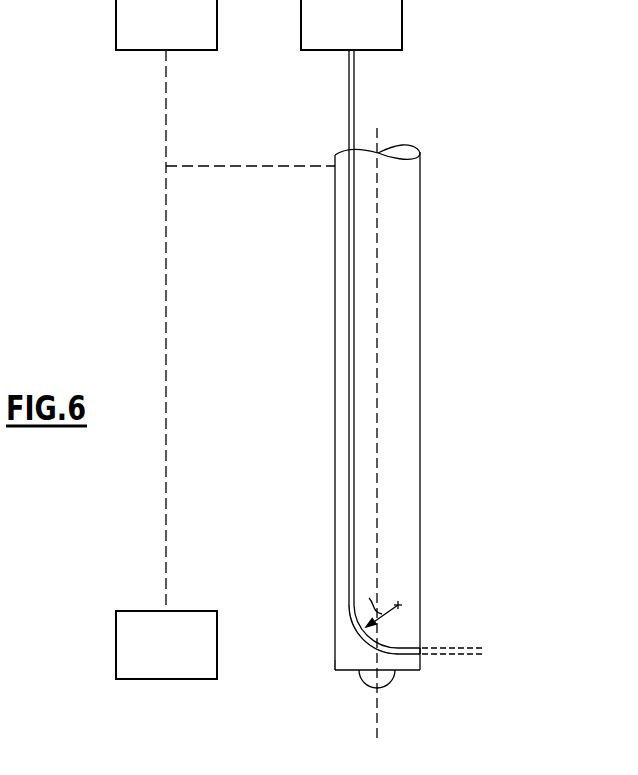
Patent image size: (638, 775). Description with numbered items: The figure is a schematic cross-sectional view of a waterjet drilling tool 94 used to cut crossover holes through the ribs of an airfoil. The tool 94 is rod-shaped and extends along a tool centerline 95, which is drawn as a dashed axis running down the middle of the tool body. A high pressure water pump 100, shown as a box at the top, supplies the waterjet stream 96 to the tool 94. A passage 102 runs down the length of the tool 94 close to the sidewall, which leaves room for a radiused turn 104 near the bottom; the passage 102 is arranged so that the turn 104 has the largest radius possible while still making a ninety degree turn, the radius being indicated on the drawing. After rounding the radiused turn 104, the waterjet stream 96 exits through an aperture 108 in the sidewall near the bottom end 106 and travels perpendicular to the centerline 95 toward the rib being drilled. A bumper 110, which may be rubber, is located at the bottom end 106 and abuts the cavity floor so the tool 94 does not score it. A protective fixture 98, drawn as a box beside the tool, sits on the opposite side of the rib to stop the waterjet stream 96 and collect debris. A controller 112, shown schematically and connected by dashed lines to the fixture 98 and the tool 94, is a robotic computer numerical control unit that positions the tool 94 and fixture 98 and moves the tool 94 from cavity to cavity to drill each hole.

The tool 94 is at (407, 322).
The tool centerline 95 is at (377, 221).
The waterjet stream 96 is at (465, 650).
The protective fixture 98 is at (152, 660).
The high pressure water pump 100 is at (332, 33).
The passage 102 is at (350, 275).
The radiused turn 104 is at (367, 646).
The bottom end 106 is at (325, 673).
The aperture 108 is at (421, 651).
The bumper 110 is at (387, 682).
The controller 112 is at (146, 33).